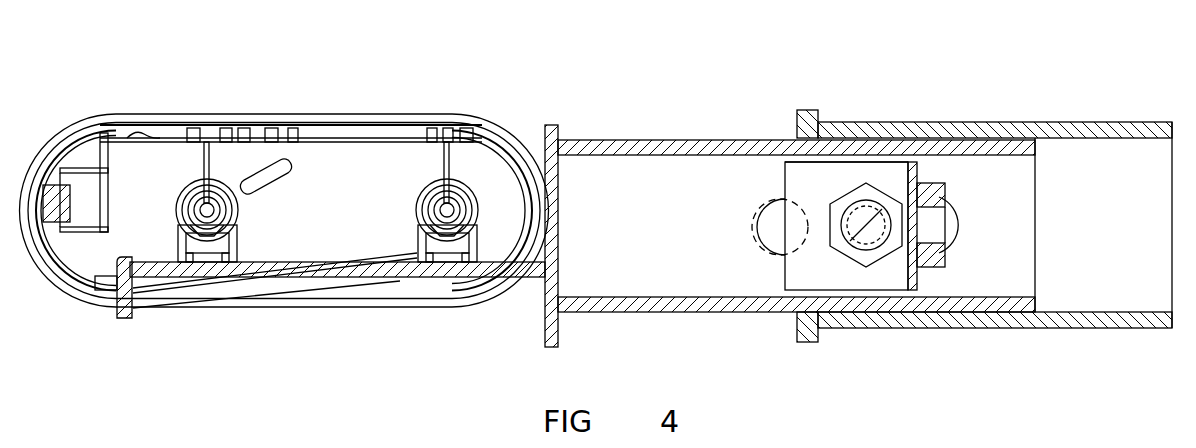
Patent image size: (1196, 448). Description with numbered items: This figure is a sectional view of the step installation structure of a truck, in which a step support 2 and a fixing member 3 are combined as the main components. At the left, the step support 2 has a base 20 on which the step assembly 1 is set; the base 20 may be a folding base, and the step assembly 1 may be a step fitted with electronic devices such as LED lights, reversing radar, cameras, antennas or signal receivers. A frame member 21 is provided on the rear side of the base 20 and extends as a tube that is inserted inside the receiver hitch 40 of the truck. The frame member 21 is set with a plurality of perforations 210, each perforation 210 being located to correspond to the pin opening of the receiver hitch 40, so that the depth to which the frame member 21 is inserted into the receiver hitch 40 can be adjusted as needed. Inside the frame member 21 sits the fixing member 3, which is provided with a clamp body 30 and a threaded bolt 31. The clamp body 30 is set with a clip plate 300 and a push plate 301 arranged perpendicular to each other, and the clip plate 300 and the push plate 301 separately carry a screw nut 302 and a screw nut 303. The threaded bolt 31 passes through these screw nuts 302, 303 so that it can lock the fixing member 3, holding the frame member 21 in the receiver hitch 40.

The step assembly 1 is at (283, 165).
The step support 2 is at (834, 181).
The base 20 is at (482, 280).
The frame member 21 is at (680, 142).
The perforation 210 is at (773, 197).
The fixing member 3 is at (877, 203).
The clamp body 30 is at (807, 265).
The clip plate 300 is at (840, 167).
The push plate 301 is at (912, 200).
The screw nut 302 is at (867, 262).
The screw nut 303 is at (940, 185).
The threaded bolt 31 is at (867, 217).
The receiver hitch 40 is at (1070, 125).